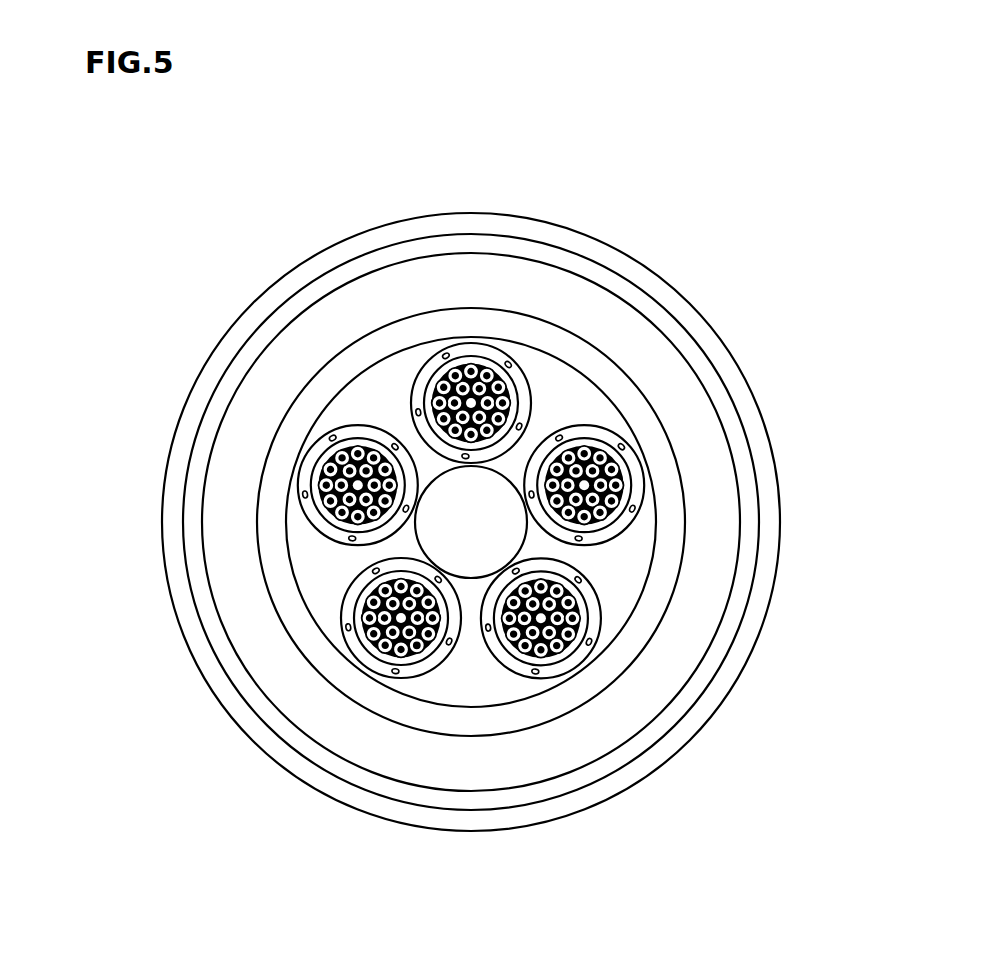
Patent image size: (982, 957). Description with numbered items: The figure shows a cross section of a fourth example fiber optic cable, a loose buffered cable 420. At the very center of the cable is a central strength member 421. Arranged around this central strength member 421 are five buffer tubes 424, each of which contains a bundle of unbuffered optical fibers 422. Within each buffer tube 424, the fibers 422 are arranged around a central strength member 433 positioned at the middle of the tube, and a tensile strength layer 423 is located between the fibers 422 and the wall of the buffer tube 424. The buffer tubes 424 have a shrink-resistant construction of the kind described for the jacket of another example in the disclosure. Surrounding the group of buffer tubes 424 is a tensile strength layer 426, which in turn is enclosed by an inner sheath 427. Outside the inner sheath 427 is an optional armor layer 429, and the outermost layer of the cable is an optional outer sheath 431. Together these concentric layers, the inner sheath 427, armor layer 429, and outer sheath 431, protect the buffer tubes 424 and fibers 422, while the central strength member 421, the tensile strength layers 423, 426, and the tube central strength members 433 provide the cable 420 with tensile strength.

The loose buffered cable 420 is at (520, 195).
The central strength member 421 is at (470, 578).
The unbuffered optical fibers 422 is at (399, 620).
The tensile strength layers 423 is at (407, 636).
The buffer tubes 424 is at (344, 627).
The tensile strength layer 426 is at (282, 562).
The inner sheath 427 is at (227, 563).
The armor layer 429 is at (218, 637).
The outer sheath 431 is at (192, 387).
The central strength members 433 is at (414, 650).